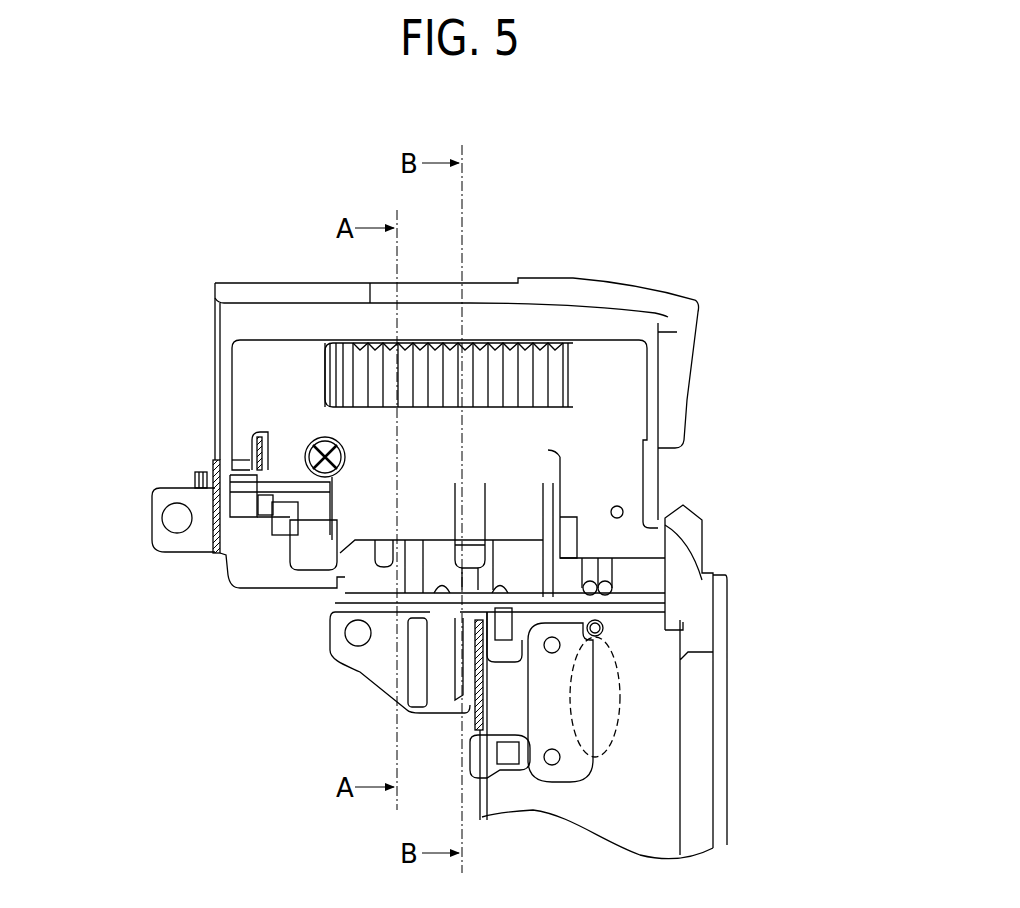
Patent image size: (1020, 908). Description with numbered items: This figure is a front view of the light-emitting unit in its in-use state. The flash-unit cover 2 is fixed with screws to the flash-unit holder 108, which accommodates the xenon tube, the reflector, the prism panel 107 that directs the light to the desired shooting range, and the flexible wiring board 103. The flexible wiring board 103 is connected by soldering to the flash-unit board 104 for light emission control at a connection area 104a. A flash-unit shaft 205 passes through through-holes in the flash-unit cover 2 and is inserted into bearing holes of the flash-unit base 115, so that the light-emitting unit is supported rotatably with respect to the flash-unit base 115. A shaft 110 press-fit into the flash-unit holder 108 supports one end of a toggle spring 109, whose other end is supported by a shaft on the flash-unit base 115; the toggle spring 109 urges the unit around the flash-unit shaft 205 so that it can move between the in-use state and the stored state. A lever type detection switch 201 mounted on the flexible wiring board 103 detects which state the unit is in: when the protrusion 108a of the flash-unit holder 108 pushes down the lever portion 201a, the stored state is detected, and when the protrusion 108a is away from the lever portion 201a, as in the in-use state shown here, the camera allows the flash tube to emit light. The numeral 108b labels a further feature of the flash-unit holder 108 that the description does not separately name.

The flash-unit cover 2 is at (668, 316).
The flexible wiring board 103 is at (490, 775).
The flash-unit board 104 is at (660, 760).
The connection area 104a is at (604, 760).
The prism panel 107 is at (488, 375).
The flash-unit holder 108 is at (620, 387).
The protrusion 108a is at (467, 545).
The housing boss 108b is at (318, 537).
The toggle spring 109 is at (247, 507).
The shaft 110 is at (243, 447).
The flash-unit base 115 is at (150, 513).
The detection switch 201 is at (453, 628).
The lever portion 201a is at (467, 585).
The flash-unit shaft 205 is at (197, 470).